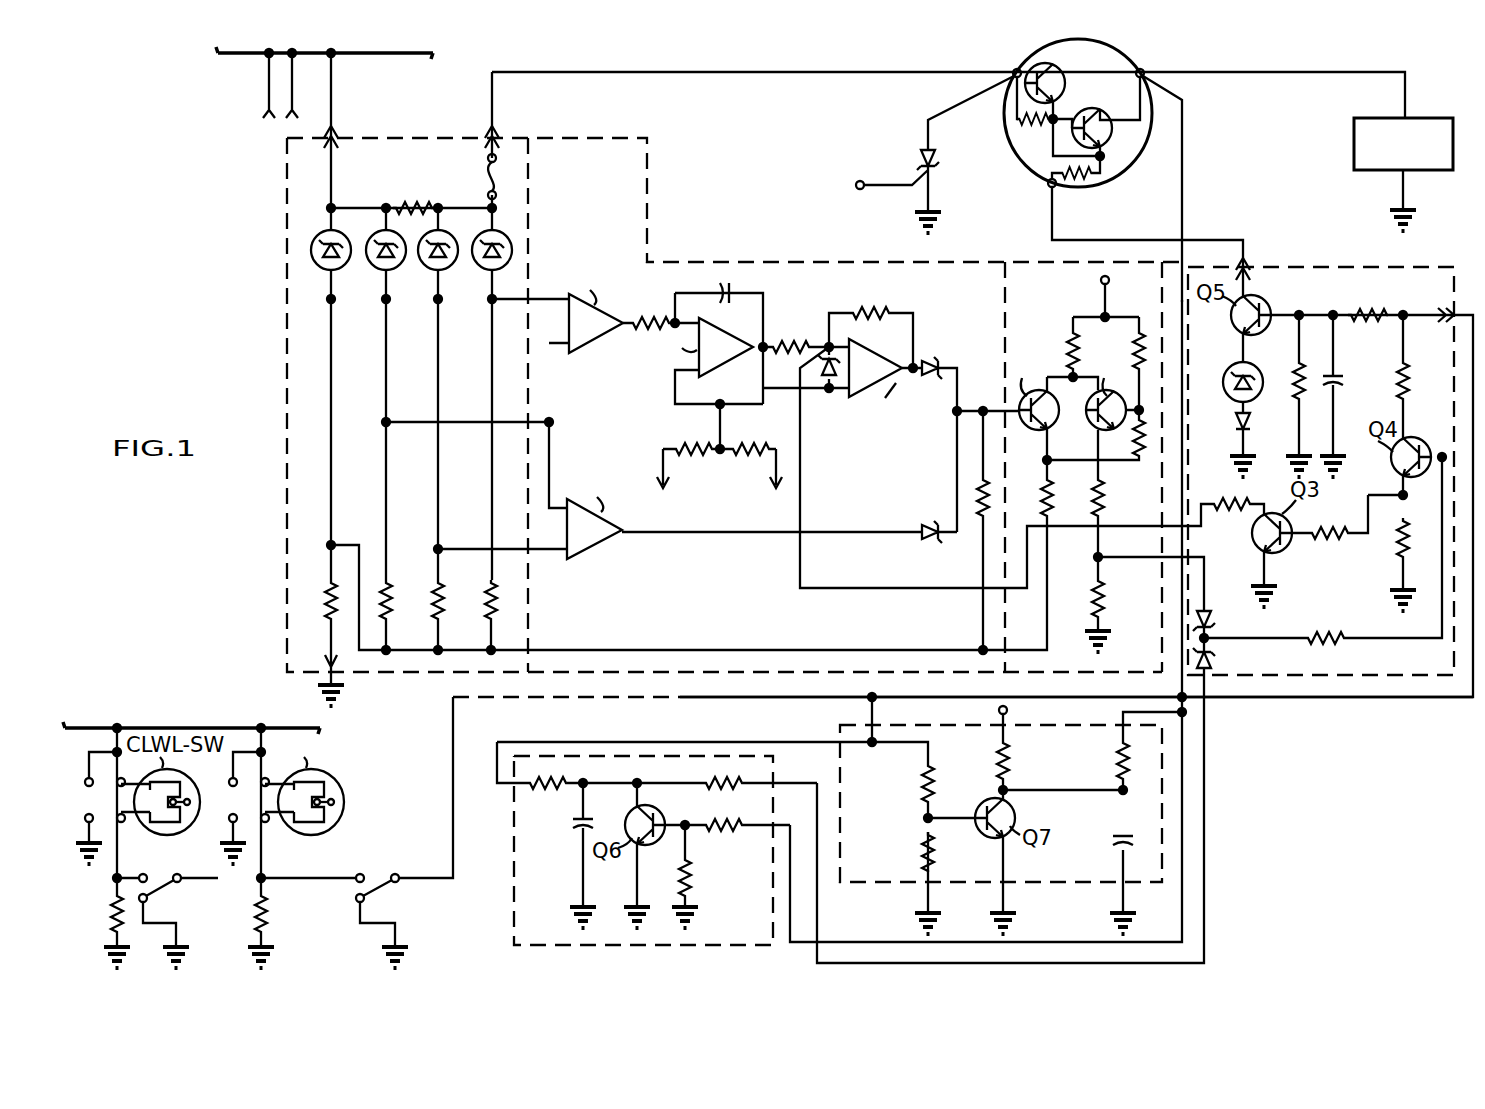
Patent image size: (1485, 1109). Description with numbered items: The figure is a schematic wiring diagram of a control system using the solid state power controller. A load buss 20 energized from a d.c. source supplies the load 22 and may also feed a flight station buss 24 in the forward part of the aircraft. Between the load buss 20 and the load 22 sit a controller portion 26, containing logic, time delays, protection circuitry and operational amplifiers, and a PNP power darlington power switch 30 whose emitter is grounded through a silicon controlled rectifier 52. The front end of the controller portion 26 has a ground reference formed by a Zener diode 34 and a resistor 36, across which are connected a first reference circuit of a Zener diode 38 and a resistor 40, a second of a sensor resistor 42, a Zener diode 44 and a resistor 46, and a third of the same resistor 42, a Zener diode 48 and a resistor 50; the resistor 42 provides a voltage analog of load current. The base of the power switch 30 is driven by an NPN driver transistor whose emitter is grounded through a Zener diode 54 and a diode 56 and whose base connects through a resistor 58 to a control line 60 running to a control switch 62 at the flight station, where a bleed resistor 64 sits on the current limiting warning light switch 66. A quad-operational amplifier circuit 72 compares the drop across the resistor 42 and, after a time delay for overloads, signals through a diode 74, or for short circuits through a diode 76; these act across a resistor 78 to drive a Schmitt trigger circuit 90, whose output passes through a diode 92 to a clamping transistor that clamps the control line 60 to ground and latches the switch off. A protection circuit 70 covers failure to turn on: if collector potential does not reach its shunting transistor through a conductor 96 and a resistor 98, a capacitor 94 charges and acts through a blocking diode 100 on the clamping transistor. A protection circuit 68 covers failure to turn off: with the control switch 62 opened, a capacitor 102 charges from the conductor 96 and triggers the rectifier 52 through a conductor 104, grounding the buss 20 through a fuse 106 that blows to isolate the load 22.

The load buss 20 is at (392, 52).
The load 22 is at (1354, 165).
The flight station buss 24 is at (234, 722).
The controller portion 26 is at (668, 256).
The power switch 30 is at (1004, 152).
The Zener diode 34 is at (325, 268).
The resistor 36 is at (328, 582).
The Zener diode 38 is at (380, 268).
The resistor 40 is at (390, 584).
The resistor 42 is at (418, 206).
The Zener diode 44 is at (432, 268).
The resistor 46 is at (442, 584).
The Zener diode 48 is at (485, 268).
The resistor 50 is at (495, 584).
The silicon controlled rectifier 52 is at (920, 150).
The Zener diode 54 is at (1230, 372).
The diode 56 is at (1236, 421).
The resistor 58 is at (1370, 320).
The control line 60 is at (764, 694).
The control switch 62 is at (380, 880).
The bleed resistor 64 is at (266, 905).
The current limiting warning light switch 66 is at (344, 788).
The protection circuit 68 is at (898, 886).
The protection circuit 70 is at (512, 880).
The quad-operational amplifier circuit 72 is at (915, 427).
The diode 74 is at (936, 360).
The diode 76 is at (924, 526).
The resistor 78 is at (968, 485).
The trigger circuit 90 is at (1079, 461).
The diode 92 is at (1208, 613).
The capacitor 94 is at (576, 830).
The conductor 96 is at (1182, 166).
The resistor 98 is at (734, 826).
The blocking diode 100 is at (1212, 658).
The capacitor 102 is at (1116, 834).
The conductor 104 is at (862, 182).
The fuse 106 is at (496, 176).